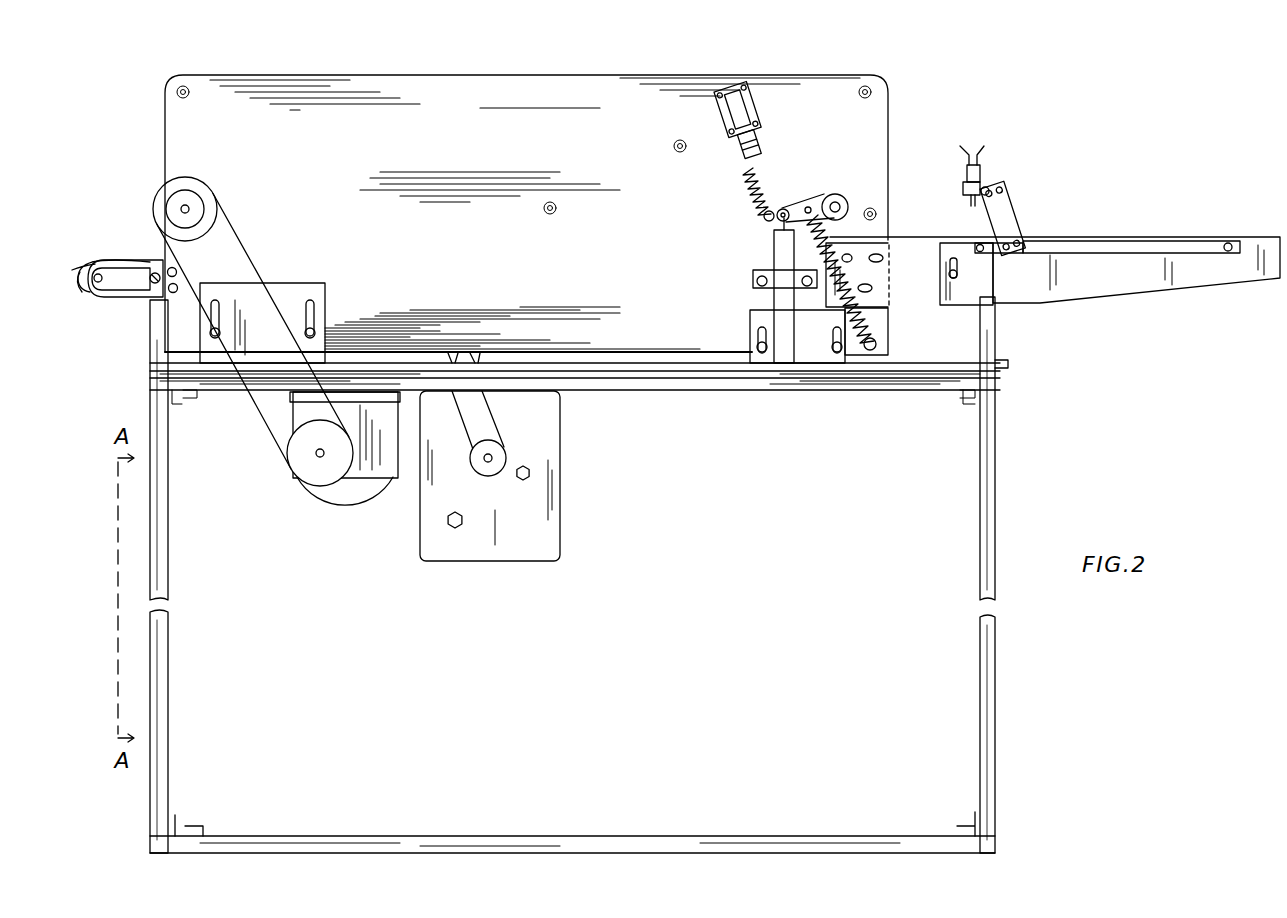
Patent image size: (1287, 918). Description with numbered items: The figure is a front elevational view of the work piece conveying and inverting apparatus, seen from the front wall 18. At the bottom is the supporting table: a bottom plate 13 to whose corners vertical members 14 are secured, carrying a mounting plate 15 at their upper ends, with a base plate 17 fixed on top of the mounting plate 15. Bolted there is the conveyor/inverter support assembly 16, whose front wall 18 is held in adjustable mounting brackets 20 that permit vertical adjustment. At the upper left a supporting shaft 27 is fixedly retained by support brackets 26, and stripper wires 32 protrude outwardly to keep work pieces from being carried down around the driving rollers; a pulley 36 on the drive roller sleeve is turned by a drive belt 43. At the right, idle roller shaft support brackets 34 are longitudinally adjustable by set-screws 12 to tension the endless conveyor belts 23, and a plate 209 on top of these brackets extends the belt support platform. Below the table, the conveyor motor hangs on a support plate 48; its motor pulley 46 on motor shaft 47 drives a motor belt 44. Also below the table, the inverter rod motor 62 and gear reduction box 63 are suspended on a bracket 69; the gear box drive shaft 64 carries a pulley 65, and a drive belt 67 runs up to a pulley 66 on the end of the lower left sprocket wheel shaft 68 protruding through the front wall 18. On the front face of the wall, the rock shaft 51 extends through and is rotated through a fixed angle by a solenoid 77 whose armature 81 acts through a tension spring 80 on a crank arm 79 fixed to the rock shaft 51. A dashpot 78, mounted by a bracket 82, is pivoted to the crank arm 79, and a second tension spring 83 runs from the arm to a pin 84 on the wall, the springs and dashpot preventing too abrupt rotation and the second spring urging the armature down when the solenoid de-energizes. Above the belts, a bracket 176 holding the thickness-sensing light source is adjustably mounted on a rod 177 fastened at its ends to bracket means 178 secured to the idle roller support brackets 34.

The set-screws 12 is at (866, 286).
The bottom plate 13 is at (598, 843).
The vertical members 14 is at (166, 770).
The mounting plate 15 is at (928, 386).
The conveyor/inverter support assembly 16 is at (492, 72).
The base plate 17 is at (672, 366).
The front wall 18 is at (322, 133).
The adjustable mounting brackets 20 is at (243, 343).
The endless conveyor belts 23 is at (1140, 238).
The support brackets 26 is at (122, 289).
The supporting shaft 27 is at (99, 272).
The stripper wires 32 is at (78, 263).
The idle roller shaft support brackets 34 is at (1074, 280).
The pulley 36 is at (87, 290).
The drive belt 43 is at (138, 298).
The motor belt 44 is at (498, 421).
The motor pulley 46 is at (504, 456).
The motor shaft 47 is at (488, 462).
The support plate 48 is at (503, 532).
The rock shaft 51 is at (840, 195).
The inverter rod motor 62 is at (362, 497).
The gear reduction box 63 is at (350, 431).
The drive shaft 64 is at (317, 454).
The pulley 65 is at (322, 479).
The pulley 66 is at (186, 177).
The drive belt 67 is at (268, 424).
The sprocket wheel shaft 68 is at (190, 207).
The bracket 69 is at (400, 397).
The solenoid 77 is at (740, 118).
The dashpot 78 is at (774, 304).
The crank arm 79 is at (808, 203).
The tension spring 80 is at (768, 186).
The armature 81 is at (758, 145).
The bracket 82 is at (753, 281).
The second tension spring 83 is at (865, 308).
The pin 84 is at (880, 343).
The bracket 176 is at (963, 190).
The rod 177 is at (986, 188).
The bracket means 178 is at (1010, 207).
The plate 209 is at (1210, 240).